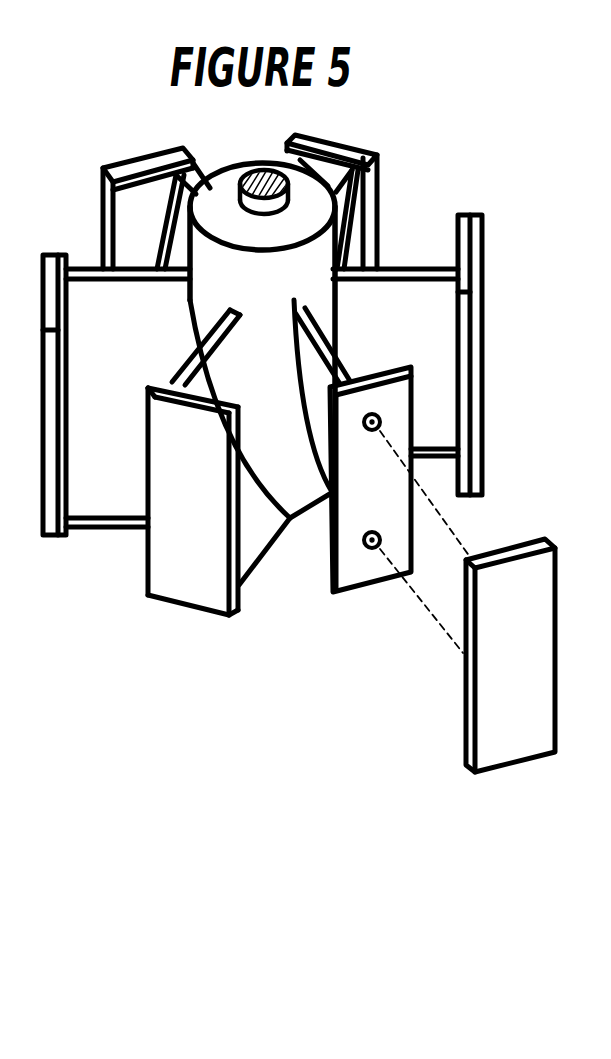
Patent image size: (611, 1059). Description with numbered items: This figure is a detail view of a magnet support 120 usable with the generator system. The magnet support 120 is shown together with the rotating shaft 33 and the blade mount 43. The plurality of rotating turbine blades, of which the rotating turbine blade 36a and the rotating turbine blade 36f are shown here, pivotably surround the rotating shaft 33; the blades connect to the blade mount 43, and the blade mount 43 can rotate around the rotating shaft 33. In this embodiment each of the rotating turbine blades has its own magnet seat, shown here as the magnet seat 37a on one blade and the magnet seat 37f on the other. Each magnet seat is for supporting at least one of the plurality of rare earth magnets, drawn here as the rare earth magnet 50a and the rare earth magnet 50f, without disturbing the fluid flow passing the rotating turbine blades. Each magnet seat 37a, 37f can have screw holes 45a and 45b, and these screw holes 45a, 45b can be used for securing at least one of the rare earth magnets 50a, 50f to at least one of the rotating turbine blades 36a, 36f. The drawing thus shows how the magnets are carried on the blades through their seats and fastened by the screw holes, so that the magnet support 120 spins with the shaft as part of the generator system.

The magnet support 120 is at (436, 130).
The blade mount 43 is at (228, 185).
The rotating shaft 33 is at (262, 183).
The rotating turbine blade 36a is at (300, 352).
The rotating turbine blade 36f is at (257, 531).
The magnet seat 37f is at (174, 381).
The magnet seat 37a is at (373, 572).
The screw hole 45a is at (381, 420).
The screw hole 45b is at (381, 538).
The rare earth magnet 50f is at (185, 590).
The rare earth magnet 50a is at (520, 748).